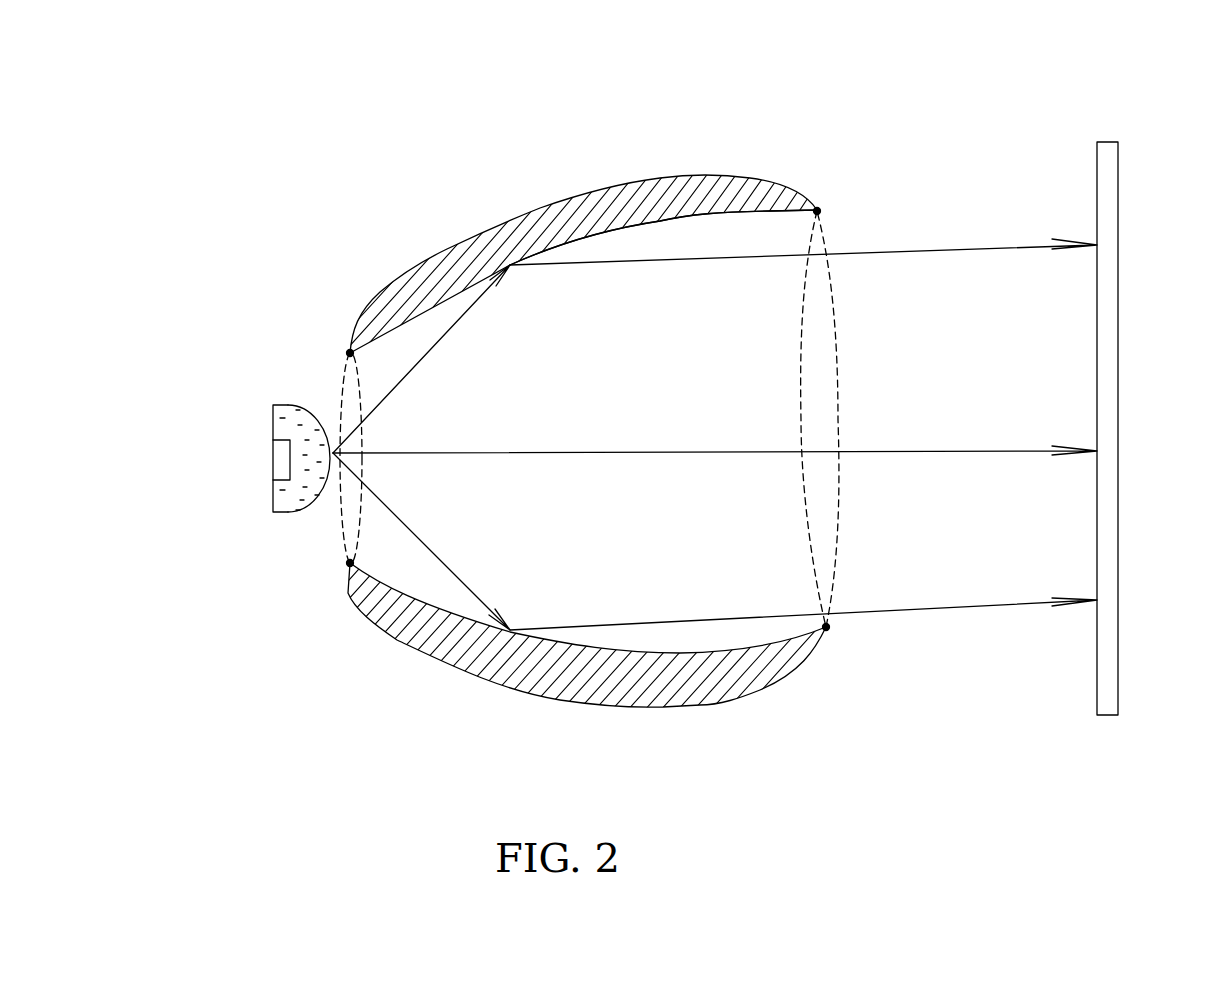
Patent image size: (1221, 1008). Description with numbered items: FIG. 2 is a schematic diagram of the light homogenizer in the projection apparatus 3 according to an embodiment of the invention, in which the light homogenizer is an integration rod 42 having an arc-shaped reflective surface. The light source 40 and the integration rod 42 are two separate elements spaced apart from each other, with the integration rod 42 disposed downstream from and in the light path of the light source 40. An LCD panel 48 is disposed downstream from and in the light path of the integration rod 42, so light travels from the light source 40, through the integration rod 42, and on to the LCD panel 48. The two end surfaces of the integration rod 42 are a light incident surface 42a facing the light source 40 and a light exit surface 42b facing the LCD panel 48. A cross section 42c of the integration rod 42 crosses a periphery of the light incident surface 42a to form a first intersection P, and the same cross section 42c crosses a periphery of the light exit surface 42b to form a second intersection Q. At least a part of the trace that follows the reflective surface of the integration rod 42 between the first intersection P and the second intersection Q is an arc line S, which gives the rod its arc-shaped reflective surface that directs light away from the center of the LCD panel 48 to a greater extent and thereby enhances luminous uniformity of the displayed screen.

The projection apparatus 3 is at (212, 102).
The light source 40 is at (283, 400).
The integration rod 42 is at (575, 429).
The light incident surface 42a is at (343, 393).
The light exit surface 42b is at (838, 377).
The cross section 42c is at (528, 238).
The LCD panel 48 is at (1101, 142).
The first intersection P is at (352, 353).
The second intersection Q is at (820, 213).
The arc line S is at (647, 222).